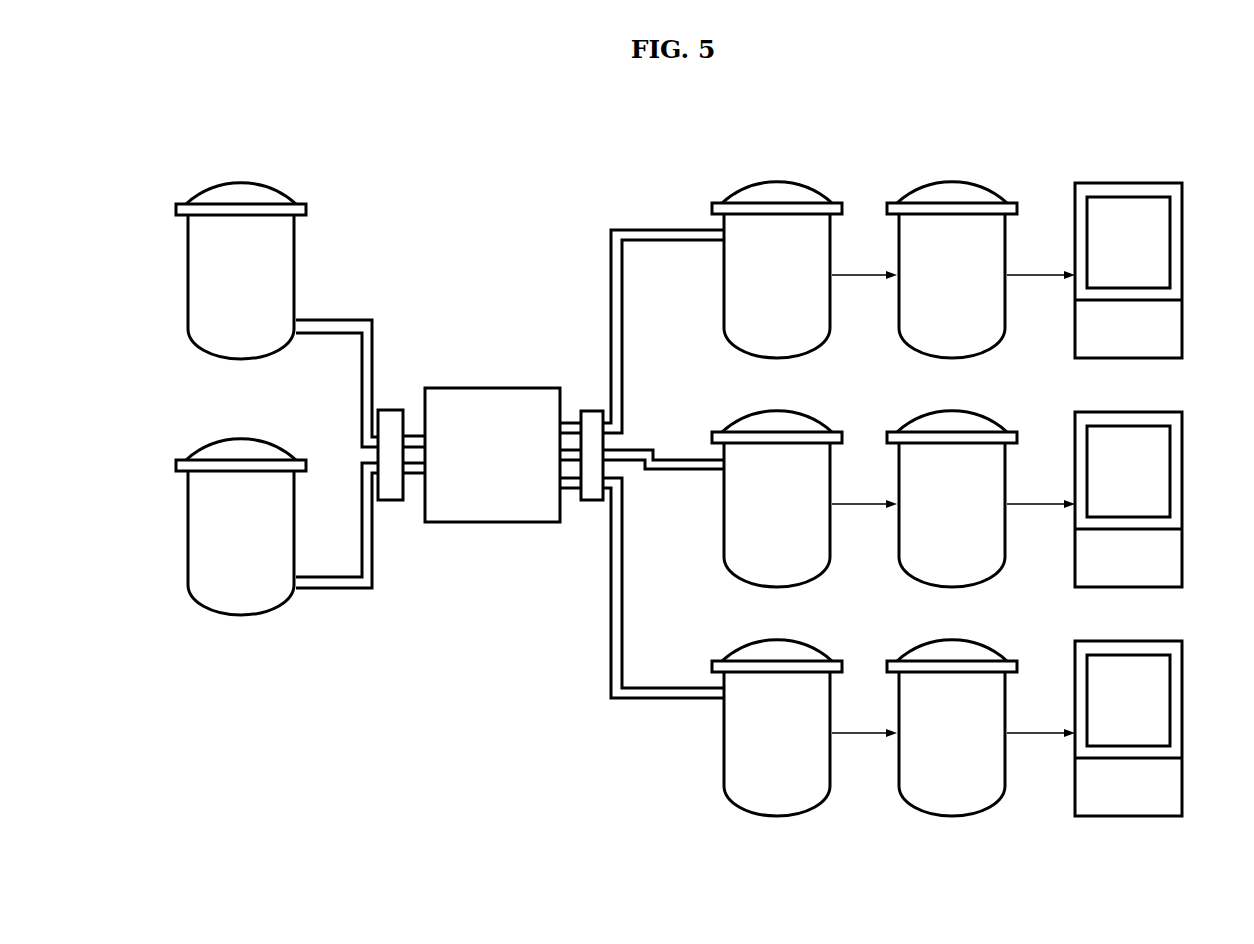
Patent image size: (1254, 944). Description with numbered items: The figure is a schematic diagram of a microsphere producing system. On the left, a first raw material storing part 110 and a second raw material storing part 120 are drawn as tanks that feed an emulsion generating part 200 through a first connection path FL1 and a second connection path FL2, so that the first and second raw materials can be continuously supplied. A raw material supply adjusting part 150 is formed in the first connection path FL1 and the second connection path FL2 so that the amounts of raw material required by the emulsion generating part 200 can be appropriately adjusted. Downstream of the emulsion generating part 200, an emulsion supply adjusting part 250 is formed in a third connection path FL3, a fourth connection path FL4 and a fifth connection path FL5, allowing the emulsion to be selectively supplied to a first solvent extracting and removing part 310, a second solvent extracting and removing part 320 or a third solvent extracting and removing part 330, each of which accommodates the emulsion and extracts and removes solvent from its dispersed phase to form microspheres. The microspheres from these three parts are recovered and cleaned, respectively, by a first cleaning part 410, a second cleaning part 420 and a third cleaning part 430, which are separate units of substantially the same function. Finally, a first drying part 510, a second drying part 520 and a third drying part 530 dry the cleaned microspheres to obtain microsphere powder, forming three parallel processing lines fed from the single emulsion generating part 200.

The first raw material storing part 110 is at (197, 272).
The second raw material storing part 120 is at (197, 527).
The raw material supply adjusting part 150 is at (391, 410).
The emulsion generating part 200 is at (490, 388).
The emulsion supply adjusting part 250 is at (588, 411).
The first solvent extracting and removing part 310 is at (775, 340).
The second solvent extracting and removing part 320 is at (775, 569).
The third solvent extracting and removing part 330 is at (775, 797).
The first cleaning part 410 is at (950, 340).
The second cleaning part 420 is at (950, 569).
The third cleaning part 430 is at (950, 797).
The first drying part 510 is at (1128, 340).
The second drying part 520 is at (1128, 569).
The third drying part 530 is at (1128, 797).
The first connection path FL1 is at (347, 320).
The second connection path FL2 is at (348, 590).
The third connection path FL3 is at (672, 230).
The fourth connection path FL4 is at (678, 469).
The fifth connection path FL5 is at (678, 698).